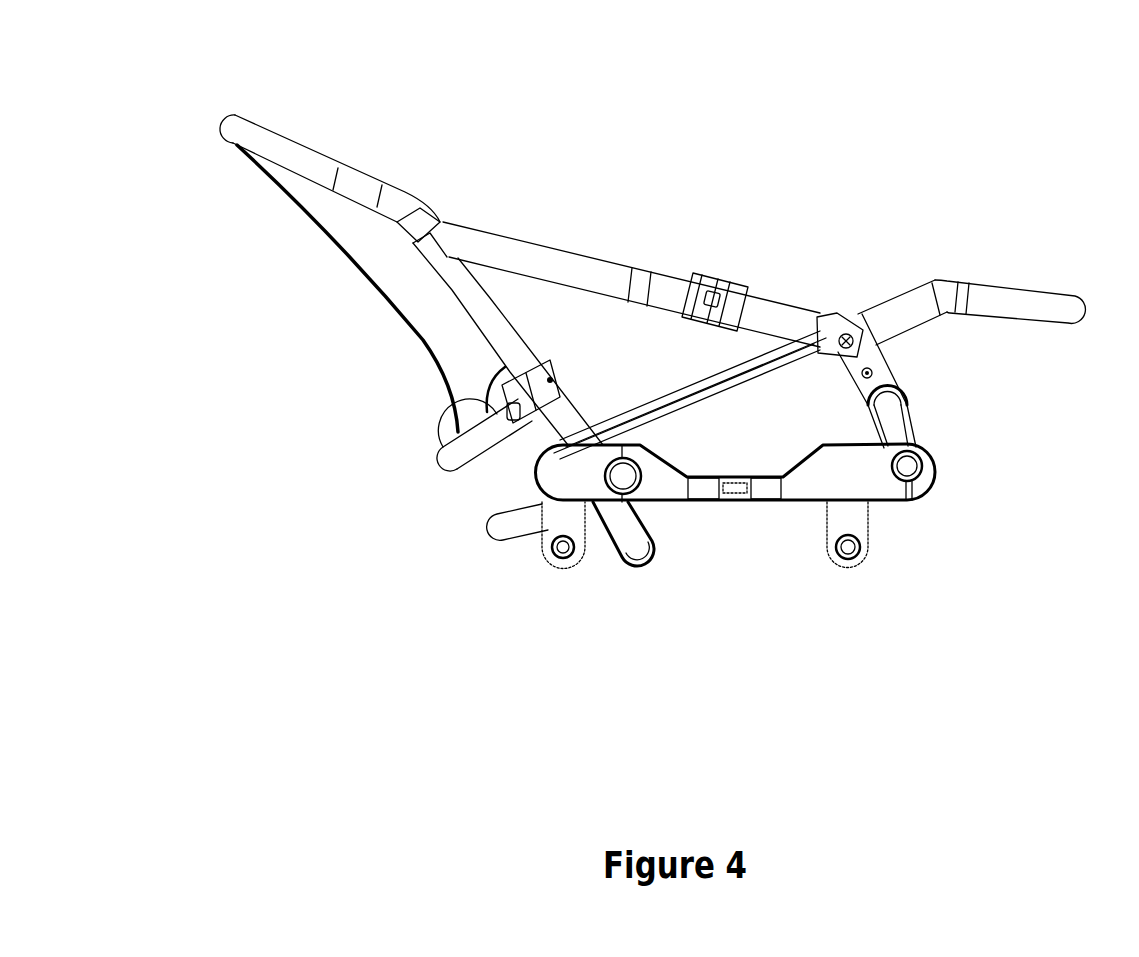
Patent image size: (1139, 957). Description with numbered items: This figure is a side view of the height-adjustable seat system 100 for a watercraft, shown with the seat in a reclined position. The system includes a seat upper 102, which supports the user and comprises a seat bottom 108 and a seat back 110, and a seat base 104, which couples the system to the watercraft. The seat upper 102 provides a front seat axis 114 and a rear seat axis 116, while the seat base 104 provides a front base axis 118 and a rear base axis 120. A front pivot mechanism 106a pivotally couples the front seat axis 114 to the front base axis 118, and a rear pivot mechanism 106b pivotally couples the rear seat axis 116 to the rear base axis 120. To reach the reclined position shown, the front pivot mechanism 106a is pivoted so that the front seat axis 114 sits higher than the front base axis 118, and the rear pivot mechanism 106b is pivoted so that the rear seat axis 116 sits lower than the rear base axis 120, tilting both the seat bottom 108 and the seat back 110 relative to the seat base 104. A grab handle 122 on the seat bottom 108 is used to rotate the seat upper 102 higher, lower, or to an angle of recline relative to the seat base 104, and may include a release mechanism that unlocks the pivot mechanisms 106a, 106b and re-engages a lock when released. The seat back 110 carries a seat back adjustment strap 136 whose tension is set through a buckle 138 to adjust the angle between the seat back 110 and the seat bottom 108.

The adjustable seat system 100 is at (925, 170).
The seat upper 102 is at (494, 193).
The seat base 104 is at (524, 544).
The front pivot mechanism 106a is at (922, 424).
The rear pivot mechanism 106b is at (616, 542).
The seat bottom 108 is at (877, 306).
The seat back 110 is at (345, 248).
The front seat axis 114 is at (884, 406).
The rear seat axis 116 is at (634, 544).
The front base axis 118 is at (907, 467).
The rear base axis 120 is at (627, 481).
The grab handle 122 is at (688, 389).
The seat back adjustment strap 136 is at (564, 257).
The buckle 138 is at (716, 289).